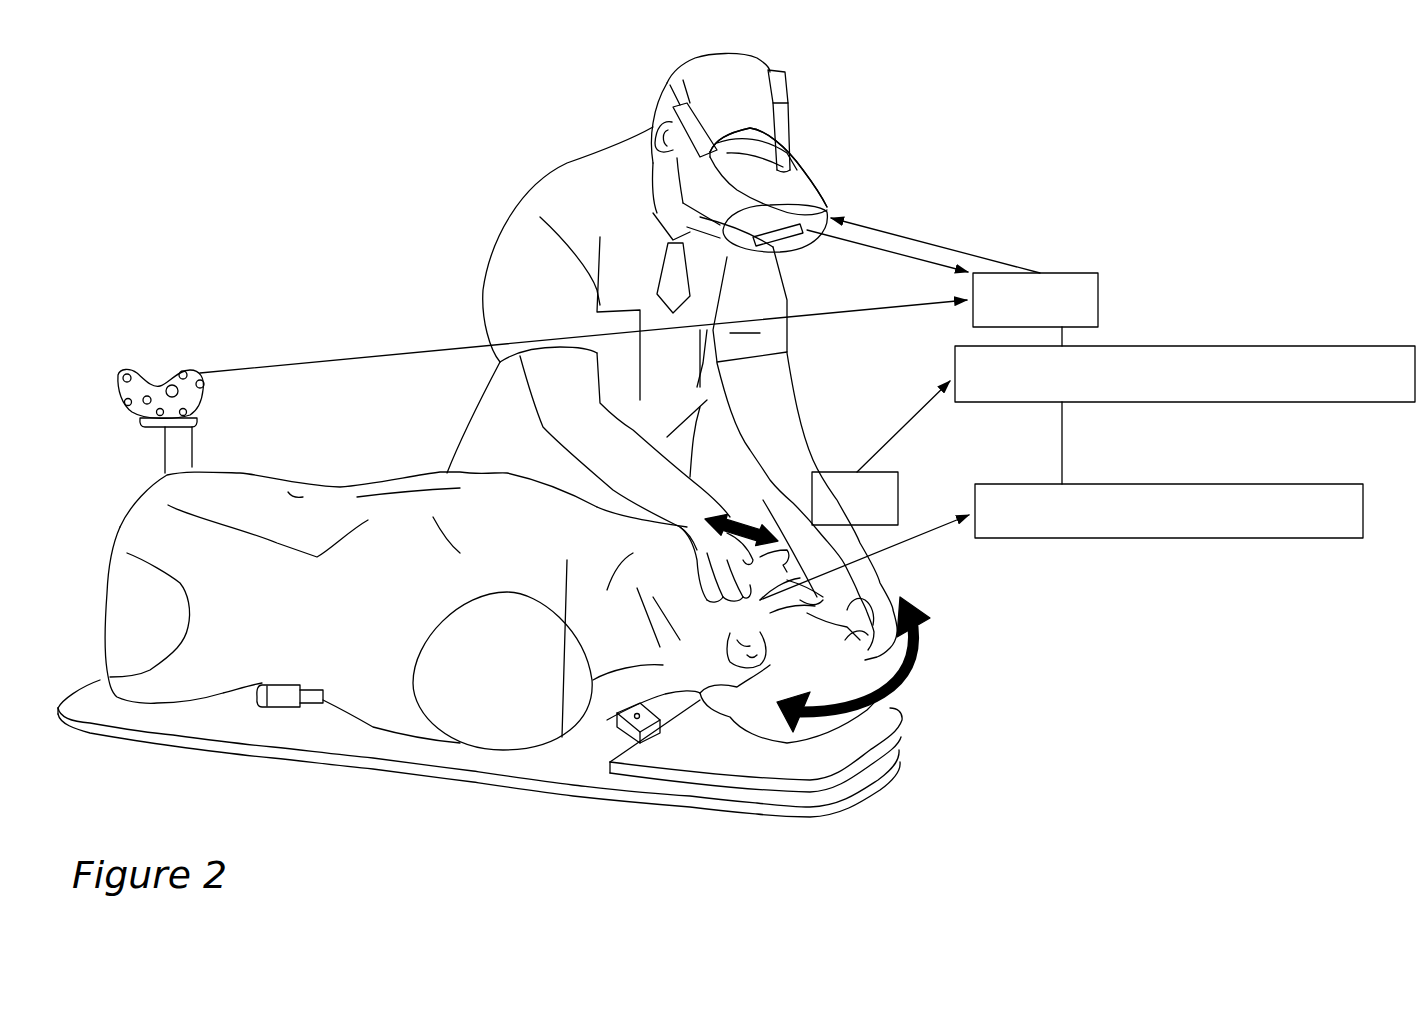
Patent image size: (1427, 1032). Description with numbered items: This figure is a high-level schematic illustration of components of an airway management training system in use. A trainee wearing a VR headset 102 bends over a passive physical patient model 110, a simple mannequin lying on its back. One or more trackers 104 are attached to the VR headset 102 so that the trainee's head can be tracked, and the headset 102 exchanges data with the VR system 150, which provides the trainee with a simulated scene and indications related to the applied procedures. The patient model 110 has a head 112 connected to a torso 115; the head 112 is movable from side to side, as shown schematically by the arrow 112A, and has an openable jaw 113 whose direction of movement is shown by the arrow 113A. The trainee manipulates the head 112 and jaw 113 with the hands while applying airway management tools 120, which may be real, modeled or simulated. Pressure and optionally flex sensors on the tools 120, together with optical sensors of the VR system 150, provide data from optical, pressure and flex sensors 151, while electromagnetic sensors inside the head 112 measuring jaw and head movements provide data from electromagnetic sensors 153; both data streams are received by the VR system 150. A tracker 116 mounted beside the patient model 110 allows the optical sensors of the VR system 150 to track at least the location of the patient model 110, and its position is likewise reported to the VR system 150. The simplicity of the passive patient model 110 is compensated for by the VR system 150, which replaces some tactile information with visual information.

The VR headset 102 is at (808, 178).
The tracker 104 is at (793, 252).
The passive physical patient model 110 is at (372, 452).
The head 112 is at (862, 653).
The arrow 112A is at (920, 627).
The jaw 113 is at (775, 553).
The arrow 113A is at (703, 524).
The torso 115 is at (390, 690).
The tracker 116 is at (118, 383).
The airway management tools 120 is at (898, 497).
The VR system 150 is at (1098, 300).
The data from optical, pressure and flex sensors 151 is at (1210, 346).
The data from electromagnetic sensors 153 is at (1100, 484).